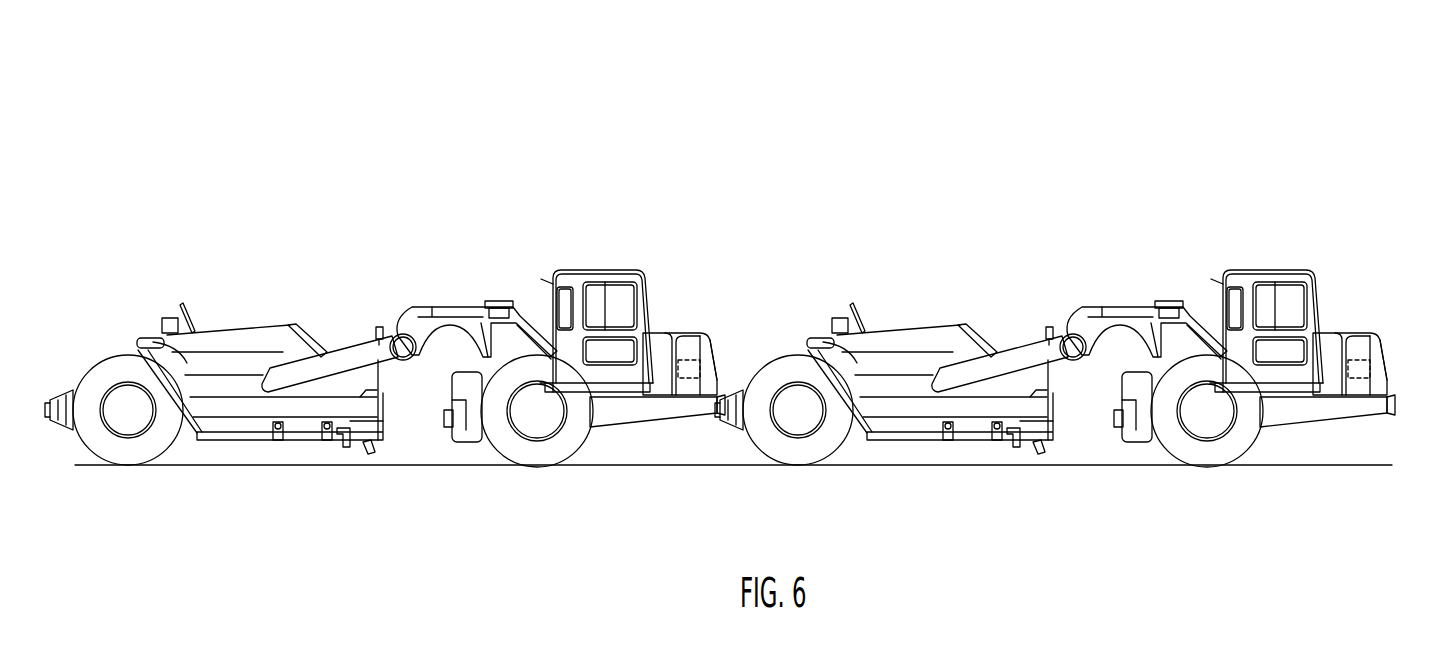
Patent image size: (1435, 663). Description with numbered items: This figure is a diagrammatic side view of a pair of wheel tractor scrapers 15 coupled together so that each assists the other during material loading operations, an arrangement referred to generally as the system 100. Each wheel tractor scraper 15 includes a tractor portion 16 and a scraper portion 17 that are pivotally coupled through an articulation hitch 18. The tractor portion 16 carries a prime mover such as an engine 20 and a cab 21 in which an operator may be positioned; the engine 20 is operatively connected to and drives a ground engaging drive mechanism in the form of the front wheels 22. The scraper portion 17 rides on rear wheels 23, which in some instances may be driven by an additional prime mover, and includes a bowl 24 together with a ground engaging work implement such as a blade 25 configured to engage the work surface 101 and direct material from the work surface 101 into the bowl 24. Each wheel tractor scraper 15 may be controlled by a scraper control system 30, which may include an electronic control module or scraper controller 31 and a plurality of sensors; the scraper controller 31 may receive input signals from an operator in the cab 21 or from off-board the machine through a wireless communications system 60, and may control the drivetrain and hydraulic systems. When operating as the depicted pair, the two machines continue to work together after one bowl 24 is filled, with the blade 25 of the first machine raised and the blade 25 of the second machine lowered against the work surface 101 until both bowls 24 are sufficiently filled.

The earthmoving system 100 is at (777, 91).
The wheel tractor scraper 15 is at (443, 186).
The tractor portion 16 is at (705, 352).
The scraper portion 17 is at (153, 343).
The articulation hitch 18 is at (420, 322).
The engine 20 is at (658, 350).
The cab 21 is at (598, 270).
The front wheels 22 is at (553, 448).
The rear wheels 23 is at (152, 442).
The bowl 24 is at (240, 327).
The blade 25 is at (357, 448).
The scraper control system 30 is at (660, 251).
The scraper controller 31 is at (700, 373).
The wireless communications system 60 is at (566, 176).
The work surface 101 is at (1334, 462).